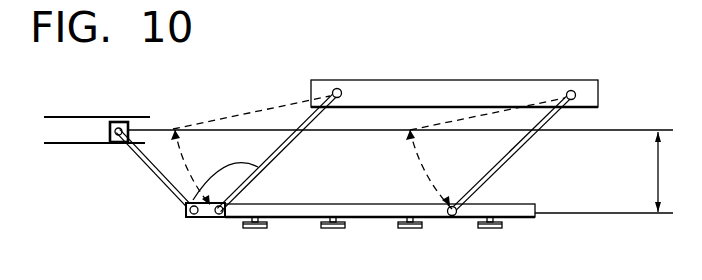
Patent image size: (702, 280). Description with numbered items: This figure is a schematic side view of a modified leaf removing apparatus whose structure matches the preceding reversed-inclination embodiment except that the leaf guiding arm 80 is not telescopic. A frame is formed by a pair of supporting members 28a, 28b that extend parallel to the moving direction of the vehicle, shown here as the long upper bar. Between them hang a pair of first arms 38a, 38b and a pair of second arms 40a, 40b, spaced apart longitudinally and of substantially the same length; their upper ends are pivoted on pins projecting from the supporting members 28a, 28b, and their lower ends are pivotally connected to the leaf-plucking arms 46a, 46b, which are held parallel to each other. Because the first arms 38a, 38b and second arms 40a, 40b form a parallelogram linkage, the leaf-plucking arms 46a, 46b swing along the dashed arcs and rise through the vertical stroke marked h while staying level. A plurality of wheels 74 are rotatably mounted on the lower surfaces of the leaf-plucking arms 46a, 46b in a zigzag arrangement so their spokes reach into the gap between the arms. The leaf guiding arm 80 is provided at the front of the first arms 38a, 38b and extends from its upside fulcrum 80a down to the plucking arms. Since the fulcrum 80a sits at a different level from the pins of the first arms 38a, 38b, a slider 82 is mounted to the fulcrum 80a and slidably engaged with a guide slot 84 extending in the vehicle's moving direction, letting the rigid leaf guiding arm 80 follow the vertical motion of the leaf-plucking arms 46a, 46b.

The supporting member 28a is at (454, 74).
The supporting member 28b is at (473, 92).
The first arm 38a is at (195, 209).
The first arm 38b is at (186, 212).
The second arm 40a is at (414, 153).
The second arm 40b is at (511, 152).
The leaf-plucking arm 46a is at (416, 238).
The leaf-plucking arm 46b is at (525, 217).
The wheel 74 is at (321, 229).
The leaf guiding arm 80 is at (155, 174).
The upside fulcrum 80a is at (111, 144).
The slider 82 is at (128, 119).
The guide slot 84 is at (83, 117).
The lift height h is at (666, 172).